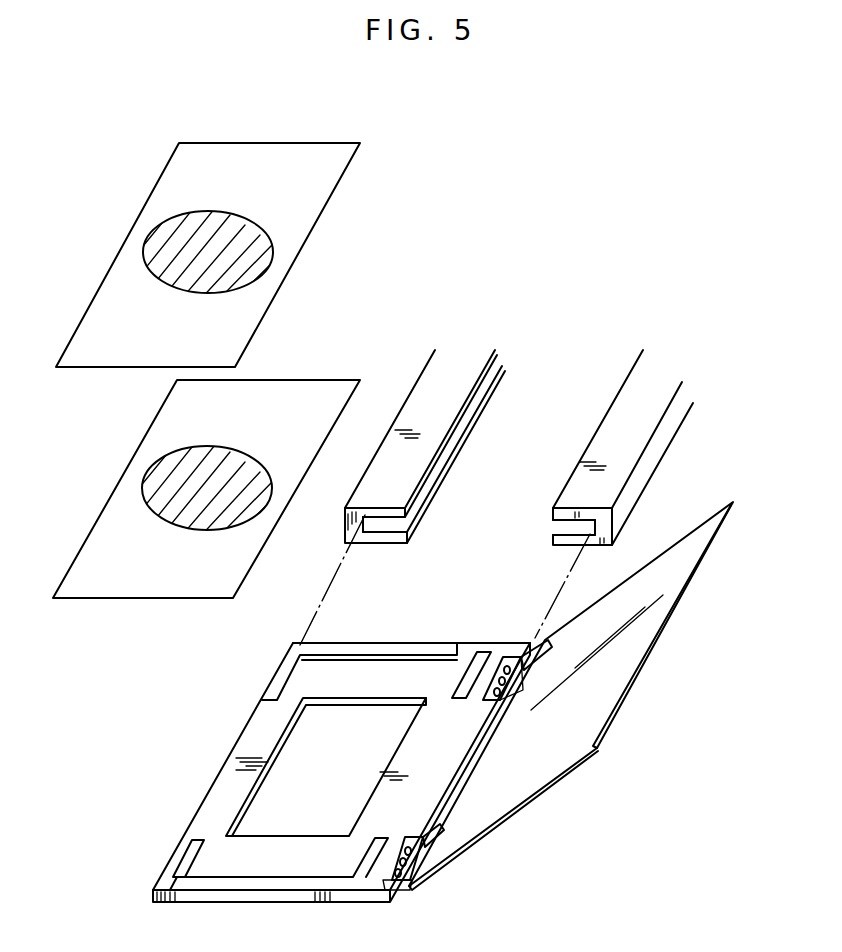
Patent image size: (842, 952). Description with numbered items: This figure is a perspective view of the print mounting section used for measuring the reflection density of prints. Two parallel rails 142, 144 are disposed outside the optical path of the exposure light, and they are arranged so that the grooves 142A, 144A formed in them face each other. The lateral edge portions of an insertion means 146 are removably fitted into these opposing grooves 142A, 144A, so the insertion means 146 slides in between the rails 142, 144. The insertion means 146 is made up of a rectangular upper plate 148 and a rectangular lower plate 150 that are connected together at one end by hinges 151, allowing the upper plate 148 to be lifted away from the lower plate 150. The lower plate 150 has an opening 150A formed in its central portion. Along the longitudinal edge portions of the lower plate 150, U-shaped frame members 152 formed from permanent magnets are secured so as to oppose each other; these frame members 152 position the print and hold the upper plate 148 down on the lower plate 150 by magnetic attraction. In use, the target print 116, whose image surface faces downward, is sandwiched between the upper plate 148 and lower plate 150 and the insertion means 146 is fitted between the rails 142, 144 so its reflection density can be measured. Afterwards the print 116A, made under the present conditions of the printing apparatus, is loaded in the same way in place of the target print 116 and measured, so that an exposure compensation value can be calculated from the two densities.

The print 116A is at (288, 141).
The print 116 is at (307, 379).
The rail 142 is at (345, 530).
The groove 142A is at (400, 527).
The rail 144 is at (616, 512).
The groove 144A is at (553, 528).
The insertion means 146 is at (428, 639).
The upper plate 148 is at (651, 662).
The lower plate 150 is at (341, 772).
The opening 150A is at (326, 767).
The hinge 151 is at (512, 655).
The U-shaped frame member 152 is at (370, 652).